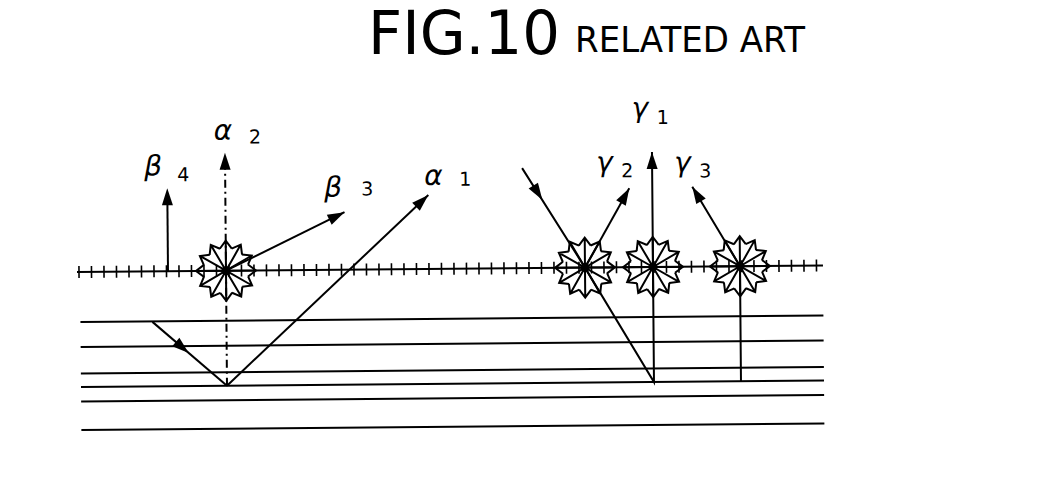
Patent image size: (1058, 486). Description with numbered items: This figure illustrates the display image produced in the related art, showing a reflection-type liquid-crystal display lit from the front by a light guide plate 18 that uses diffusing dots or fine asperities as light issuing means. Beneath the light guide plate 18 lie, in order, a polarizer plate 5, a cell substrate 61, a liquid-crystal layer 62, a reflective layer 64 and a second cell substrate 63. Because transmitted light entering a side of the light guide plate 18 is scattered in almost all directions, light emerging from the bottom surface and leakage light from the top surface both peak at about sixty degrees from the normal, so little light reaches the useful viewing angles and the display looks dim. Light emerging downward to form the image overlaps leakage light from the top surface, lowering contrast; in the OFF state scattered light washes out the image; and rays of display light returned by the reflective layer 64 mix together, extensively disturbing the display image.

The light guide plate 18 is at (820, 306).
The polarizer plate 5 is at (818, 339).
The cell substrate 61 is at (820, 363).
The liquid-crystal layer 62 is at (823, 380).
The reflective layer 64 is at (823, 393).
The cell substrate 63 is at (820, 420).